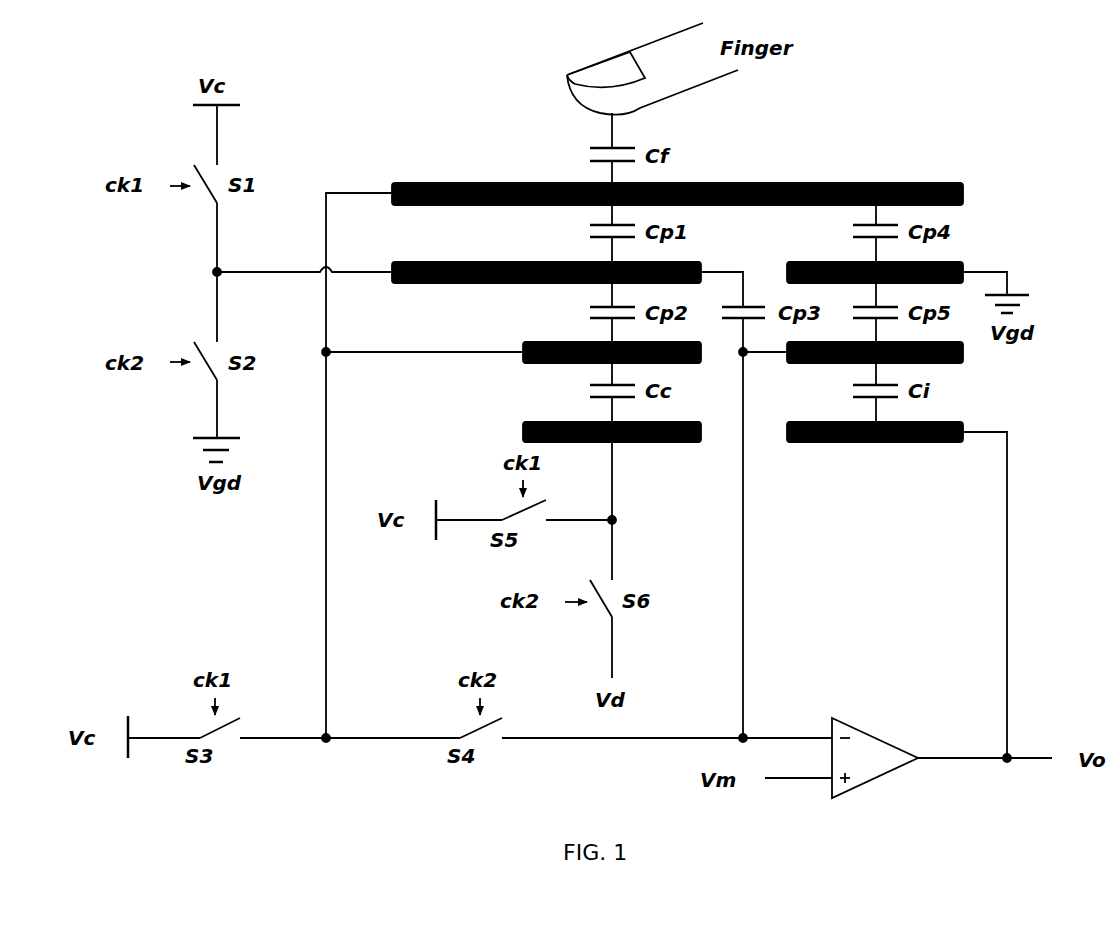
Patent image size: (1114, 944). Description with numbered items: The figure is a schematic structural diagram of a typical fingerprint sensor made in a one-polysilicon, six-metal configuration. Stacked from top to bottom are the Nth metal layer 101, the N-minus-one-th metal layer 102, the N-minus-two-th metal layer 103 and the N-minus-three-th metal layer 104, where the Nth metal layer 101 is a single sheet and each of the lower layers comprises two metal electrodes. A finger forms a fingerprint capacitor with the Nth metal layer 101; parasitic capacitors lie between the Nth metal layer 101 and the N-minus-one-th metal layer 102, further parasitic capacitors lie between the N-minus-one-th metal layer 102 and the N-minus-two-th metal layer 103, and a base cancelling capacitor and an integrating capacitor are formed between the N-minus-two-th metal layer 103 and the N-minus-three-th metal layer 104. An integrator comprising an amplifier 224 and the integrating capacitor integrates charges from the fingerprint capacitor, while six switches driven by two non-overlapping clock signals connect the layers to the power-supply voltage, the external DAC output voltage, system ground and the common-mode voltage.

The Nth metal layer 101 is at (966, 194).
The N-1th metal layer 102 is at (966, 261).
The N-2th metal layer 103 is at (966, 364).
The N-3th metal layer 104 is at (966, 444).
The amplifier 224 is at (873, 763).